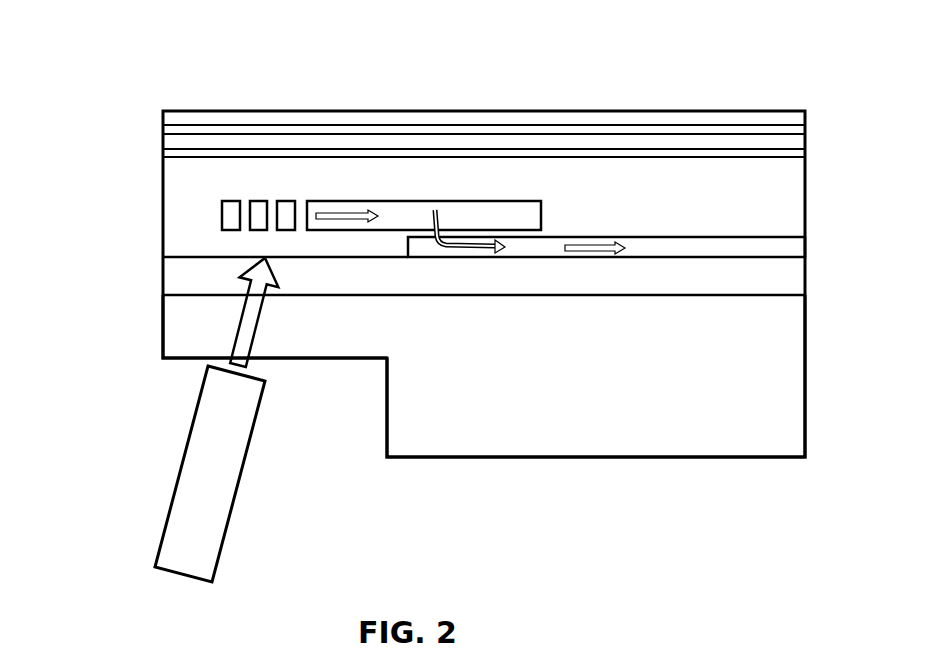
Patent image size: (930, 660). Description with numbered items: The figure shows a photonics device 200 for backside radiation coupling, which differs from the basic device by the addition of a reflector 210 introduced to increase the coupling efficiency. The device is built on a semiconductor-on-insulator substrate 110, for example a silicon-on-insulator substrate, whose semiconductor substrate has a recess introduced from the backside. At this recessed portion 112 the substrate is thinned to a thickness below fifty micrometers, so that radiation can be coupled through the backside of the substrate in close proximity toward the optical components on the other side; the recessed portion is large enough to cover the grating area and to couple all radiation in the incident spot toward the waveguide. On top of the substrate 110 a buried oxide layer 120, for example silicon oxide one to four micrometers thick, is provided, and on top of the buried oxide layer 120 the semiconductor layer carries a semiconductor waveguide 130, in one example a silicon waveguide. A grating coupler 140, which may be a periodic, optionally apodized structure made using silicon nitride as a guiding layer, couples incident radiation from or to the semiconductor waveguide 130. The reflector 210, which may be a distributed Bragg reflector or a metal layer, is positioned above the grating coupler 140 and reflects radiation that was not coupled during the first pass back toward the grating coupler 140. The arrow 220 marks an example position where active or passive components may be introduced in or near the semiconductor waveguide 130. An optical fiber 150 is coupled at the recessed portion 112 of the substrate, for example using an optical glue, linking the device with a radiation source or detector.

The photonics device 200 is at (120, 82).
The reflector 210 is at (163, 112).
The grating coupler 140 is at (218, 218).
The semiconductor waveguide 130 is at (484, 235).
The arrow 220 is at (641, 235).
The buried oxide layer 120 is at (484, 279).
The recessed portion 112 is at (199, 319).
The semiconductor-on-insulator substrate 110 is at (596, 376).
The optical fiber 150 is at (175, 450).